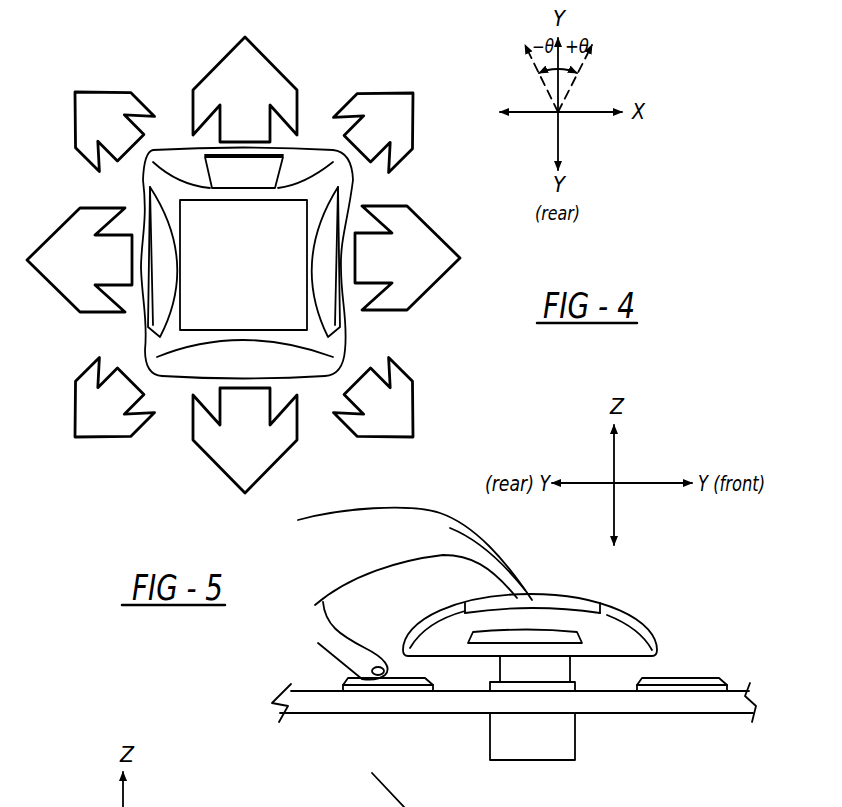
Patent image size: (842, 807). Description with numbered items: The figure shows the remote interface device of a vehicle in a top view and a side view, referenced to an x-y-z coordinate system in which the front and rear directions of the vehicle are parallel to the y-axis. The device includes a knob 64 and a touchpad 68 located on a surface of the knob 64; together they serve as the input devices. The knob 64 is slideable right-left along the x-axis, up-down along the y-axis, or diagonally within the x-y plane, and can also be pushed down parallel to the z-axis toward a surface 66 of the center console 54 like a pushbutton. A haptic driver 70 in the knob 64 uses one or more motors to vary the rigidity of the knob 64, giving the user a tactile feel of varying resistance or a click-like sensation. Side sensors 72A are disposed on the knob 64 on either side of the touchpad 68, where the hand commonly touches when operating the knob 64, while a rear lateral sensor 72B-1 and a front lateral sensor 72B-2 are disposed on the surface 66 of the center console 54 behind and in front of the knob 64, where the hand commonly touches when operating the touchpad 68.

In FIG. 5, the center console 54 is at (323, 712).
In FIG. 4, the knob 64 is at (333, 345).
In FIG. 5, the knob 64 is at (637, 627).
In FIG. 5, the surface 66 is at (303, 688).
In FIG. 4, the touchpad 68 is at (284, 231).
In FIG. 5, the touchpad 68 is at (550, 598).
In FIG. 5, the haptic driver 70 is at (547, 760).
In FIG. 4, the side sensors 72A is at (155, 316).
In FIG. 5, the side sensors 72A is at (567, 635).
In FIG. 5, the rear lateral sensor 72B-1 is at (350, 678).
In FIG. 5, the front lateral sensor 72B-2 is at (693, 682).